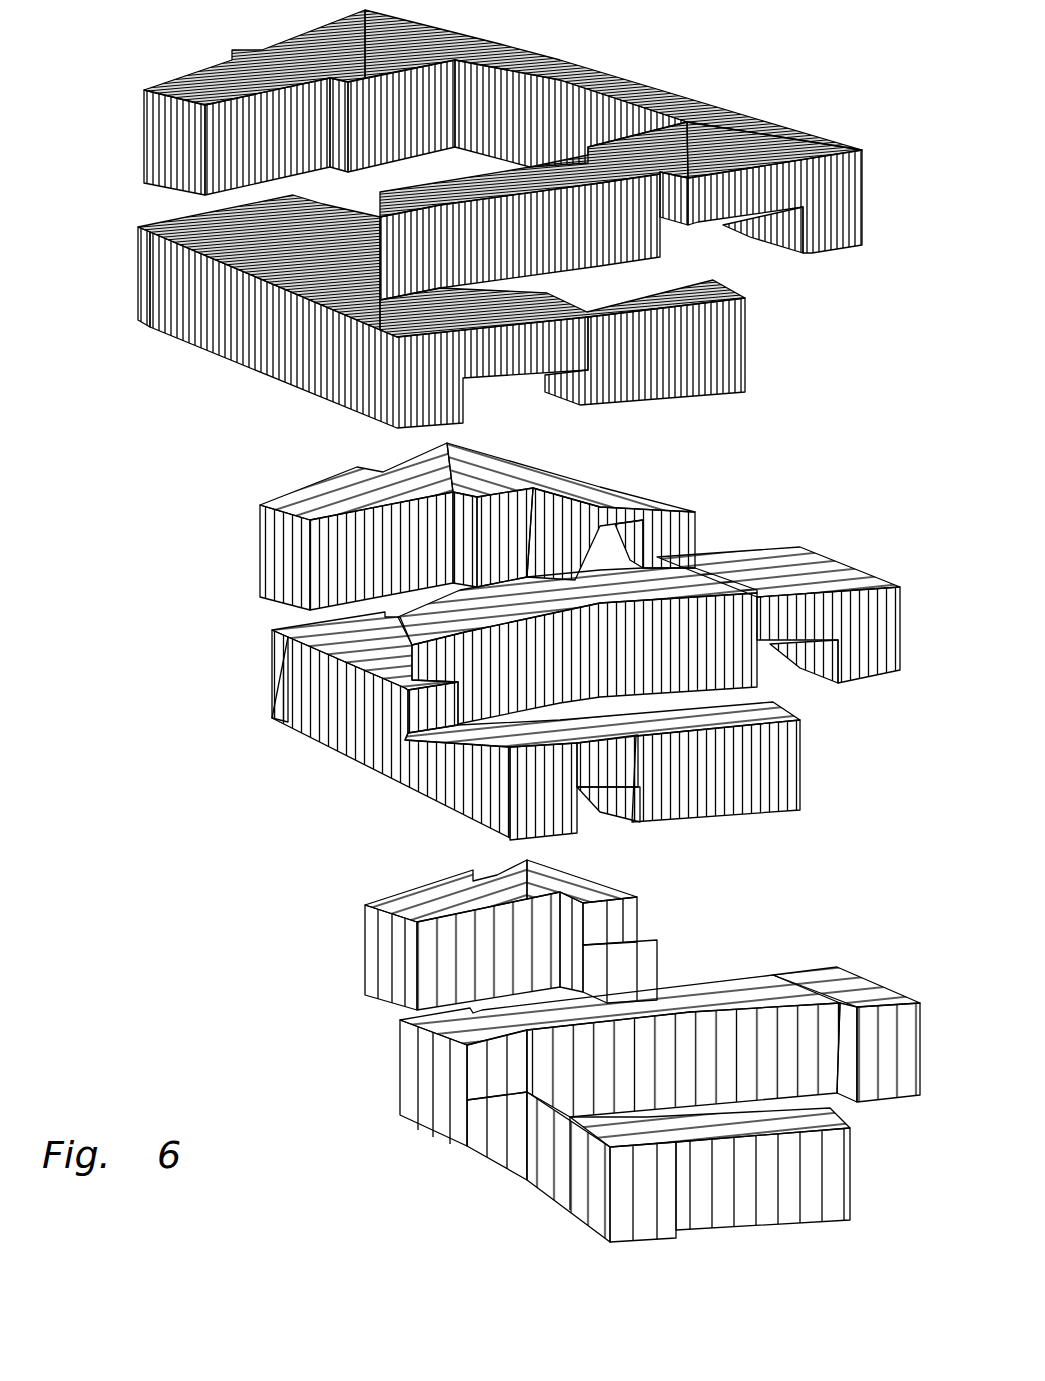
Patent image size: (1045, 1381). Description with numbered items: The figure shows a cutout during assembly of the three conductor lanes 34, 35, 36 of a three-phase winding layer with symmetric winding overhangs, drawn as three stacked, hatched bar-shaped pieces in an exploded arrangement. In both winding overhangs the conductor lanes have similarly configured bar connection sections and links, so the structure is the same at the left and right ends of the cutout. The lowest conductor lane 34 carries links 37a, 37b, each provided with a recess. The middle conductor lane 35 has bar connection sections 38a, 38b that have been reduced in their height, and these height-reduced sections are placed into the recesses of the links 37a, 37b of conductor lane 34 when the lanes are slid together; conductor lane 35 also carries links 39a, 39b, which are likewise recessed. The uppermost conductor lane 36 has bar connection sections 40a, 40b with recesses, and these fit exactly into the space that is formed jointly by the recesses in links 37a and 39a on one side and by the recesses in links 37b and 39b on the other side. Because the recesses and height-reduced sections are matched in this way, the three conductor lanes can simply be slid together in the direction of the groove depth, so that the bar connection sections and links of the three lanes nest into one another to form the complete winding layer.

The conductor lane 34 is at (338, 944).
The conductor lane 35 is at (232, 549).
The conductor lane 36 is at (125, 133).
The link 37a is at (400, 1090).
The link 37b is at (720, 975).
The bar connection section 38a is at (580, 788).
The bar connection section 38b is at (790, 665).
The link 39a is at (272, 697).
The link 39b is at (700, 557).
The bar connection section 40a is at (465, 378).
The bar connection section 40b is at (705, 224).